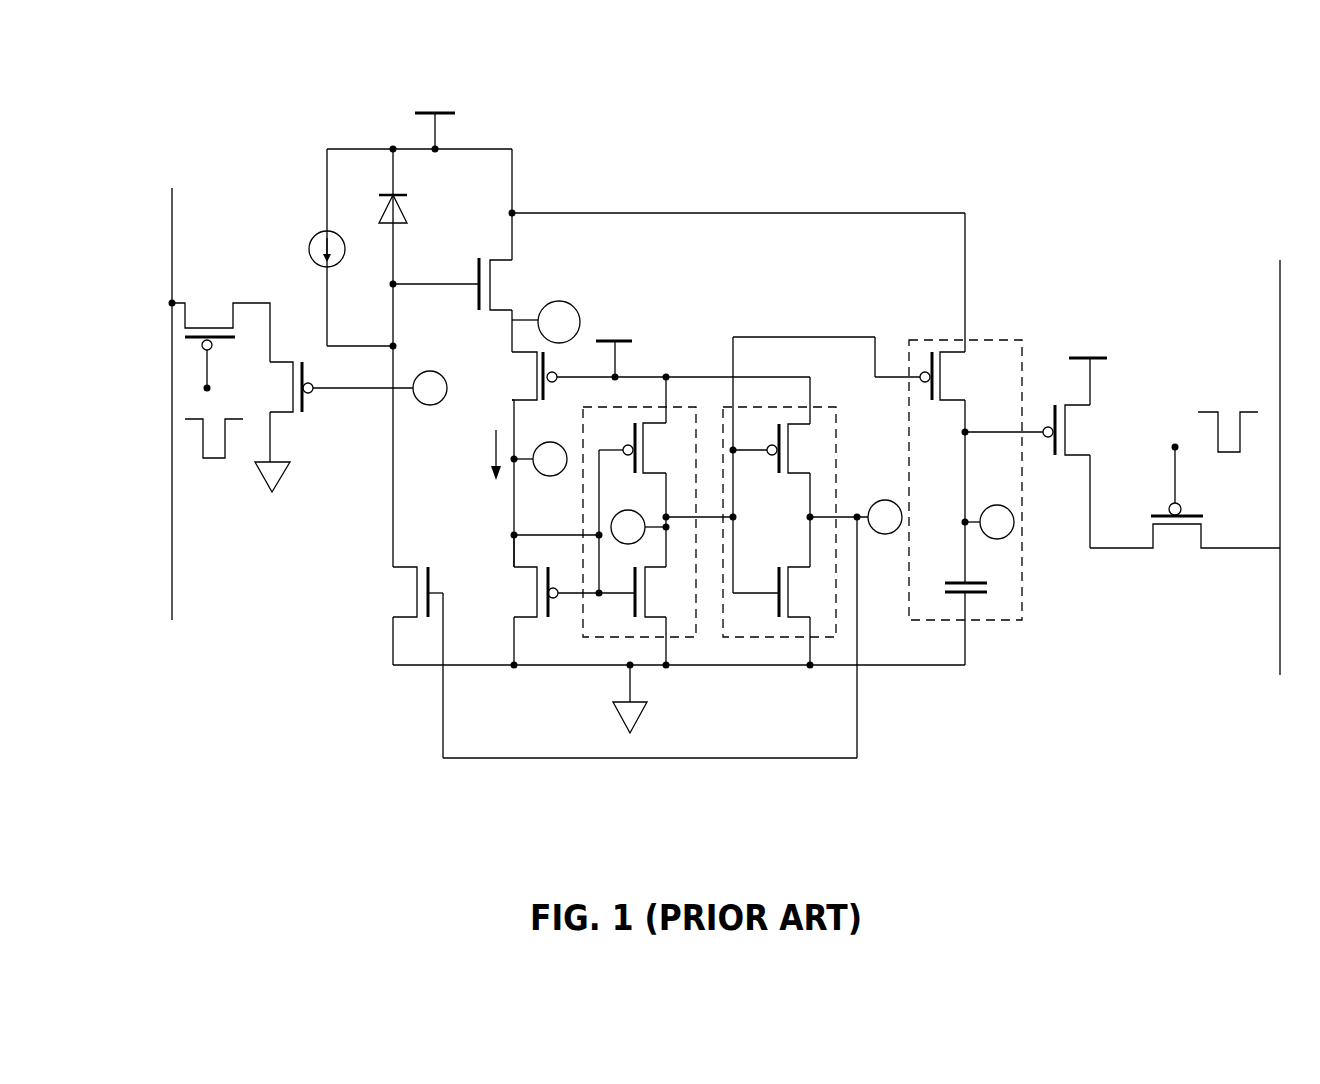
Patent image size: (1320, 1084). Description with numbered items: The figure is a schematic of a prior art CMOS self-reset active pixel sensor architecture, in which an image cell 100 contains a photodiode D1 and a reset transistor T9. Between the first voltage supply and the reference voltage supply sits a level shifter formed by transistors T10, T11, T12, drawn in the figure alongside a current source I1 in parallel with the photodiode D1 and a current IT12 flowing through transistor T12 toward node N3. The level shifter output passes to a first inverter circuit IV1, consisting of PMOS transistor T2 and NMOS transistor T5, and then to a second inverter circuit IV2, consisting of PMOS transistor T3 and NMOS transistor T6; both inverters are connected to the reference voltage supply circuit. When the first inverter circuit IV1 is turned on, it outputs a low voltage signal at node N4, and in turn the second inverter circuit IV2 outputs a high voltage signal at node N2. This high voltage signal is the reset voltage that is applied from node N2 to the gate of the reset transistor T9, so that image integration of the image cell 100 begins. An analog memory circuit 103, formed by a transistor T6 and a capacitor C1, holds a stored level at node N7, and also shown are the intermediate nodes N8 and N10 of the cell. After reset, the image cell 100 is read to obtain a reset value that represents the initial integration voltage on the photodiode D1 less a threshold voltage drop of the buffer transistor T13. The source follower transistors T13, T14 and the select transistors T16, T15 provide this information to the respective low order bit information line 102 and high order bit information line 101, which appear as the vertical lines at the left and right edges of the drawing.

The image cell 100 is at (789, 811).
The high order bit information line 101 is at (1280, 287).
The low order bit information line 102 is at (172, 215).
The analog memory circuit 103 is at (993, 339).
The PMOS transistor T2 is at (638, 425).
The PMOS transistor T3 is at (796, 425).
The NMOS transistor T5 is at (656, 592).
The transistor T6 is at (878, 484).
The reset transistor T9 is at (405, 616).
The transistor T10 is at (509, 284).
The transistor T11 is at (544, 600).
The transistor T12 is at (523, 376).
The source follower transistor T13 is at (281, 387).
The source follower transistor T14 is at (1077, 430).
The select transistor T15 is at (1177, 541).
The select transistor T16 is at (220, 336).
The photodiode D1 is at (411, 209).
The current source I1 is at (312, 249).
The capacitor C1 is at (956, 571).
The first inverter circuit IV1 is at (582, 440).
The second inverter circuit IV2 is at (822, 407).
The current through transistor T12 IT12 is at (469, 455).
The node N2 is at (856, 517).
The node N3 is at (540, 459).
The node N4 is at (638, 527).
The node N7 is at (989, 522).
The node N8 is at (430, 388).
The node N10 is at (559, 322).